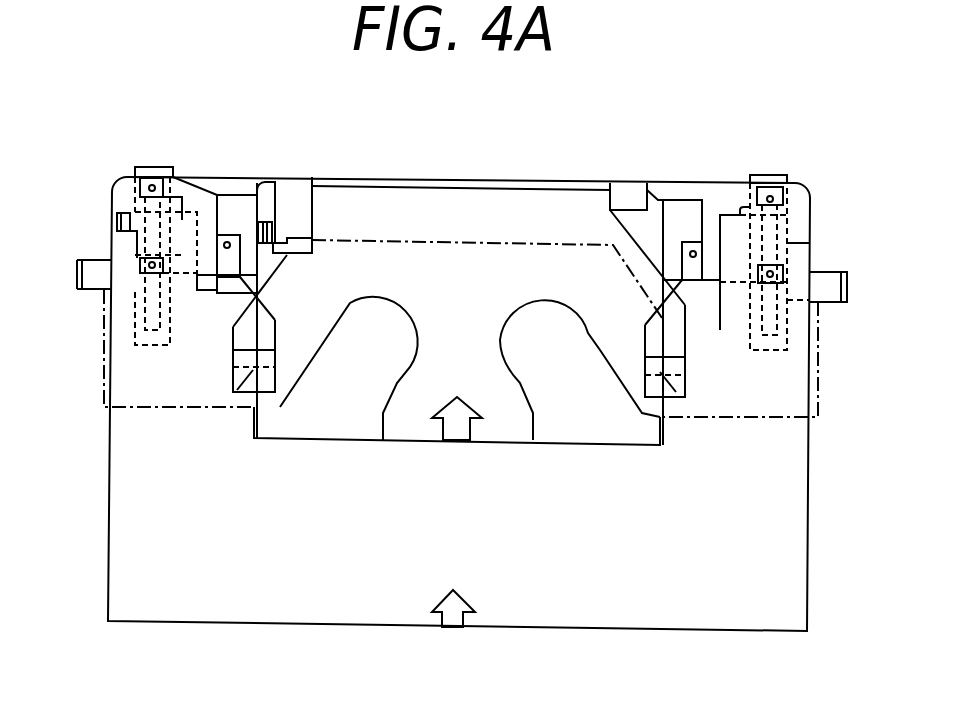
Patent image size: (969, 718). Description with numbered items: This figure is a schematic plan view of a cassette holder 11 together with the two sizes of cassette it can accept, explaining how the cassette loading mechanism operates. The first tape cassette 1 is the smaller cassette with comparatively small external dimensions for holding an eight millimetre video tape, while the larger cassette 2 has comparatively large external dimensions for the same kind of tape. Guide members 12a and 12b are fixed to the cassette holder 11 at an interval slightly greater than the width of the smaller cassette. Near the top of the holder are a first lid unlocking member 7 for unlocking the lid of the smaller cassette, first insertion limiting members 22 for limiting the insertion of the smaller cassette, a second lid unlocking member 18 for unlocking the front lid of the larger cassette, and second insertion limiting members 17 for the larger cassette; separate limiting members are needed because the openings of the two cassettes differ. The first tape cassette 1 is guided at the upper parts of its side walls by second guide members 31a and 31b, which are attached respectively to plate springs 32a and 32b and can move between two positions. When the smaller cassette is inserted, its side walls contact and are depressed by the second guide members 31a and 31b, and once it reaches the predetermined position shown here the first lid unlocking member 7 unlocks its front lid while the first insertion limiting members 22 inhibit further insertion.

The first tape cassette 1 is at (362, 442).
The larger cassette 2 is at (343, 628).
The first lid unlocking member 7 is at (273, 235).
The cassette holder 11 is at (450, 240).
The guide member 12a is at (222, 205).
The guide member 12b is at (678, 213).
The second insertion limiting member 17 is at (152, 167).
The second lid unlocking member 18 is at (118, 218).
The first insertion limiting member 22 is at (292, 175).
The second guide member 31a is at (225, 374).
The second guide member 31b is at (687, 380).
The plate spring 32a is at (240, 311).
The plate spring 32b is at (690, 303).